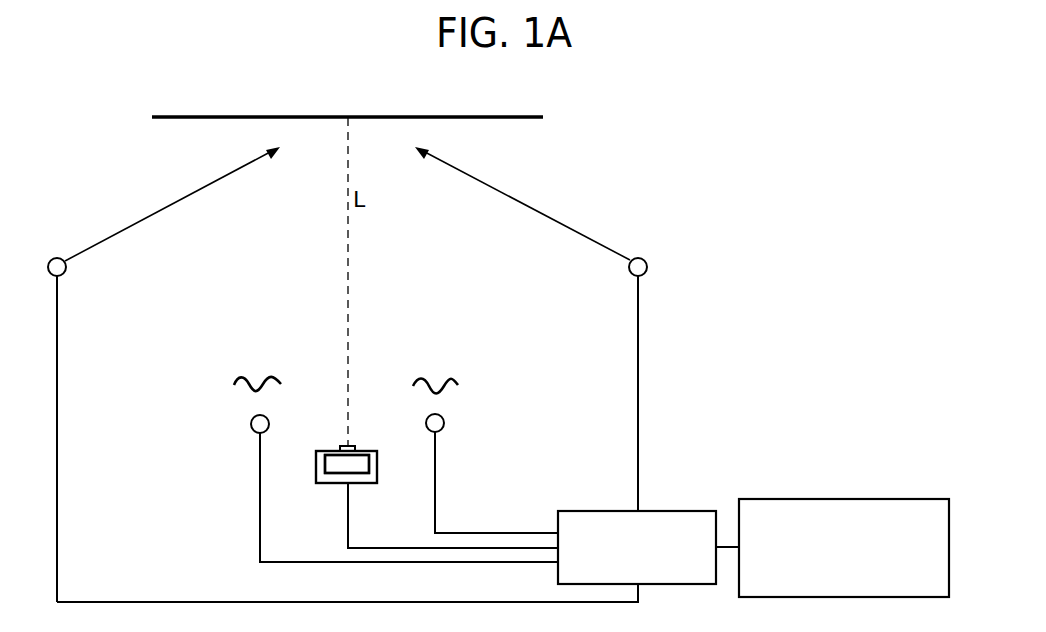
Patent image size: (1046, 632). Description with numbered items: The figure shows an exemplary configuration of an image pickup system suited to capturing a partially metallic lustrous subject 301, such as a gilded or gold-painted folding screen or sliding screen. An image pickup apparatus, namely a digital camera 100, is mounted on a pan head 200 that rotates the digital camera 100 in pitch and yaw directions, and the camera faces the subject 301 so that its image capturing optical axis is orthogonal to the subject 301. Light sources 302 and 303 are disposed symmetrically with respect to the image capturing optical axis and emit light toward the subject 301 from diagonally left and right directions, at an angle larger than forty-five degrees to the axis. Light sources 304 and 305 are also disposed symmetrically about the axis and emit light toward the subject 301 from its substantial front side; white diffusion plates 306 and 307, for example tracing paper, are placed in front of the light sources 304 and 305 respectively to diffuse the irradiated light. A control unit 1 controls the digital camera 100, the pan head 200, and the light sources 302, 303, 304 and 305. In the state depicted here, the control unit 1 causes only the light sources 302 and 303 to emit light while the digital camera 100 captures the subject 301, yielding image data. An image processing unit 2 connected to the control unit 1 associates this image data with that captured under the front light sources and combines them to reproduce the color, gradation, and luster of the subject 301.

The control unit 1 is at (668, 511).
The image processing unit 2 is at (847, 499).
The image pickup apparatus (digital camera) 100 is at (381, 435).
The pan head 200 is at (368, 483).
The subject 301 is at (520, 117).
The light source 302 is at (67, 269).
The light source 303 is at (647, 266).
The light source 304 is at (251, 425).
The light source 305 is at (444, 424).
The white diffusion plate 306 is at (232, 384).
The white diffusion plate 307 is at (458, 385).